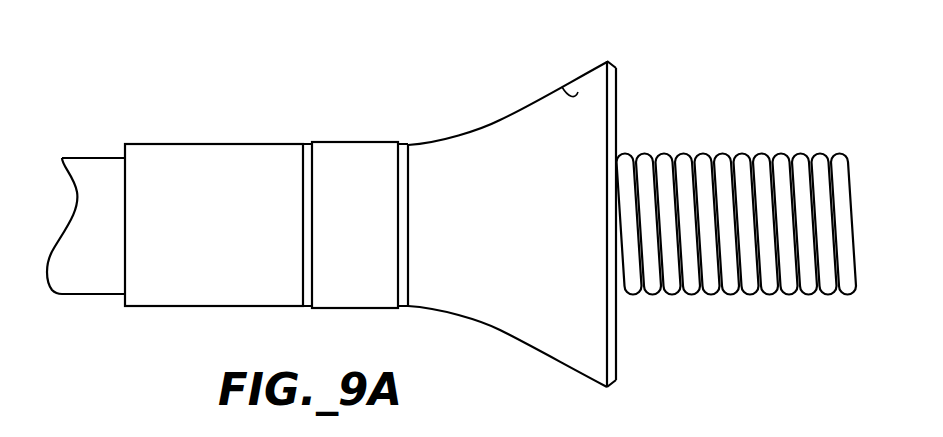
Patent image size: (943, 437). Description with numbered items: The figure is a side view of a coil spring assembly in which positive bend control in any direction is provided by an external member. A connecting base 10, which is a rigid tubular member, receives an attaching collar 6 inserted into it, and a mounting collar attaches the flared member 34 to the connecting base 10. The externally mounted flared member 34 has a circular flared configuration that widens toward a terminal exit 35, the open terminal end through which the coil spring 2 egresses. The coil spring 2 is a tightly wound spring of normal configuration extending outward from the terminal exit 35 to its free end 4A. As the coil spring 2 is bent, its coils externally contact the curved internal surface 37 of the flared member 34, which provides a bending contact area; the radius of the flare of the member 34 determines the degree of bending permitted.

The connecting base 10 is at (105, 156).
The attaching collar 6 is at (244, 162).
The flared member 34 is at (532, 112).
The internal surface 37 is at (578, 92).
The terminal exit 35 is at (617, 130).
The coil spring 2 is at (800, 182).
The end of coil spring 4A is at (853, 203).